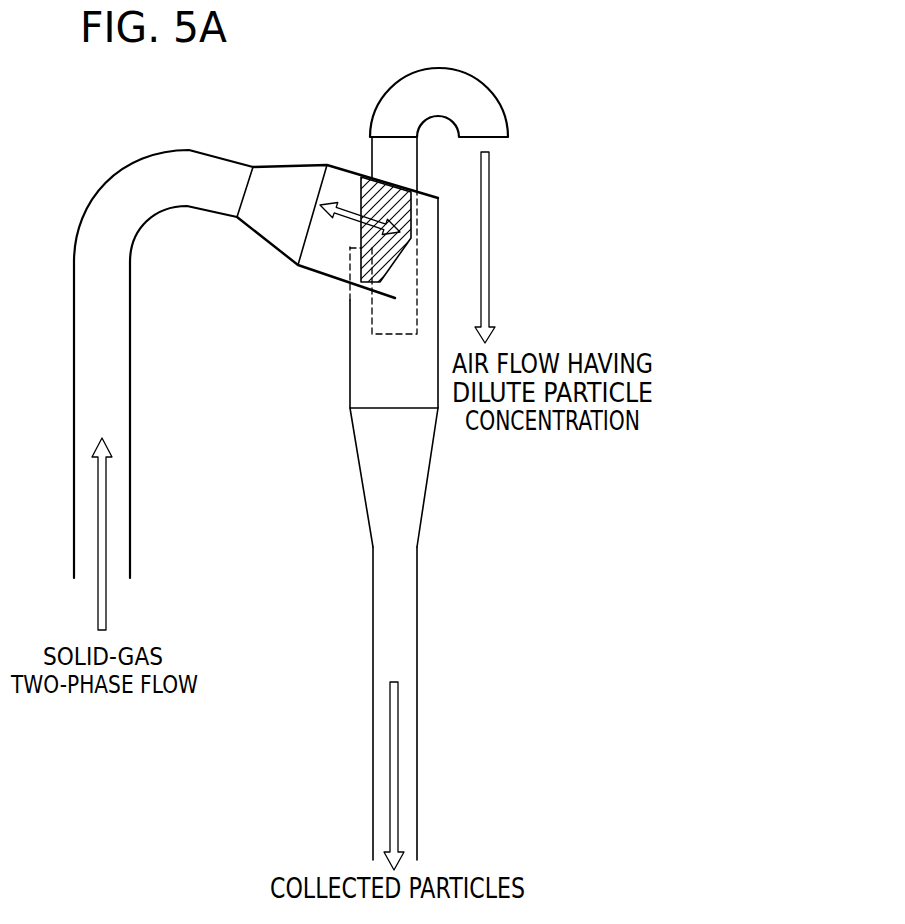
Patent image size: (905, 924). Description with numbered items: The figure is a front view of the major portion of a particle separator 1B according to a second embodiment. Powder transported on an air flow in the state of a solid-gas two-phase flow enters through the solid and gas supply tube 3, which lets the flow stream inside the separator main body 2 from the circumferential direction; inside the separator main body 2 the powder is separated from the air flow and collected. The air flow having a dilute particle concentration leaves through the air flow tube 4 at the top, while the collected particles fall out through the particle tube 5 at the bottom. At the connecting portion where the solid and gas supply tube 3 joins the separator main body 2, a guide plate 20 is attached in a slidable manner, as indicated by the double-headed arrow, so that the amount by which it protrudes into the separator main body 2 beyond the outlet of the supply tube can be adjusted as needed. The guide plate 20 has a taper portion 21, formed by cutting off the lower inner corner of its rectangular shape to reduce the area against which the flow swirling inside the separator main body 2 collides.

The particle separator 1B is at (503, 63).
The separator main body 2 is at (350, 375).
The solid and gas supply tube 3 is at (193, 150).
The air flow tube 4 is at (372, 156).
The particle tube 5 is at (417, 681).
The guide plate 20 is at (353, 189).
The taper portion 21 is at (397, 263).